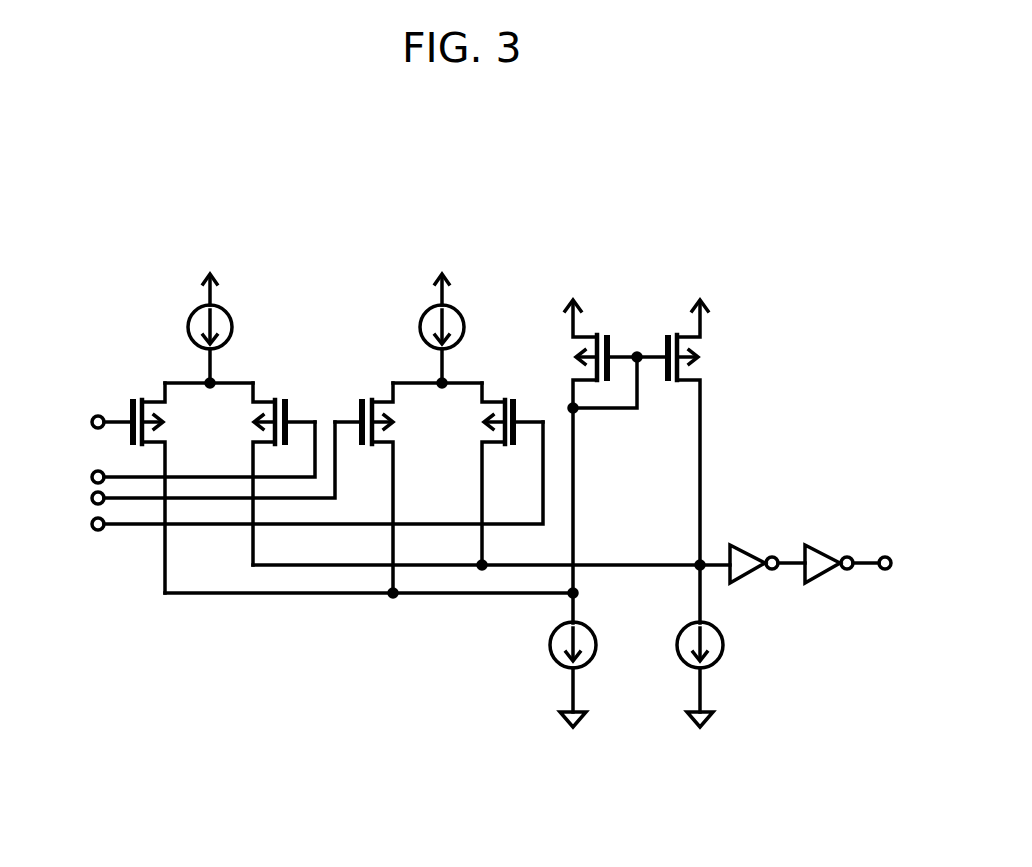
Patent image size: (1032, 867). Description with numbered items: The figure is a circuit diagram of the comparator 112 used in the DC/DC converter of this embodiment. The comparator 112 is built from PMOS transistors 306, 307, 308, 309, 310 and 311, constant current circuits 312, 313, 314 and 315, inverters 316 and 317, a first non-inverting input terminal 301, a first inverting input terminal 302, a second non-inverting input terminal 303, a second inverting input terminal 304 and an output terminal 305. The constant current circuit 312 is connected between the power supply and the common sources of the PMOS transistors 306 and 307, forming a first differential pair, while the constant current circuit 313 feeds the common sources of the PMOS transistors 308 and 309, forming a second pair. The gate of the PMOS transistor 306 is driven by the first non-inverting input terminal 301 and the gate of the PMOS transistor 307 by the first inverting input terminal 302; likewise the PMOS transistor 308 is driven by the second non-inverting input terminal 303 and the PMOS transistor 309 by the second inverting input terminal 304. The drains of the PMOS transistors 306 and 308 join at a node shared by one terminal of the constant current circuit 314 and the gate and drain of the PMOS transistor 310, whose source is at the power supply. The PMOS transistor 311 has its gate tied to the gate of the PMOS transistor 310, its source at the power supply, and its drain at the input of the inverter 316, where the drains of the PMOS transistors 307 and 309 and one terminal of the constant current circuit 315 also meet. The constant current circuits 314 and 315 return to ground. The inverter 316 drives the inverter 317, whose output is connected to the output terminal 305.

The comparator 112 is at (517, 222).
The first non-inverting input terminal 301 is at (96, 410).
The first inverting input terminal 302 is at (176, 455).
The second non-inverting input terminal 303 is at (186, 466).
The second inverting input terminal 304 is at (290, 480).
The output terminal 305 is at (885, 555).
The PMOS transistor 306 is at (145, 397).
The PMOS transistor 307 is at (272, 397).
The PMOS transistor 308 is at (376, 397).
The PMOS transistor 309 is at (501, 397).
The PMOS transistor 310 is at (593, 330).
The PMOS transistor 311 is at (677, 330).
The constant current circuit 312 is at (236, 312).
The constant current circuit 313 is at (468, 312).
The constant current circuit 314 is at (551, 642).
The constant current circuit 315 is at (723, 640).
The inverter 316 is at (747, 543).
The inverter 317 is at (822, 543).